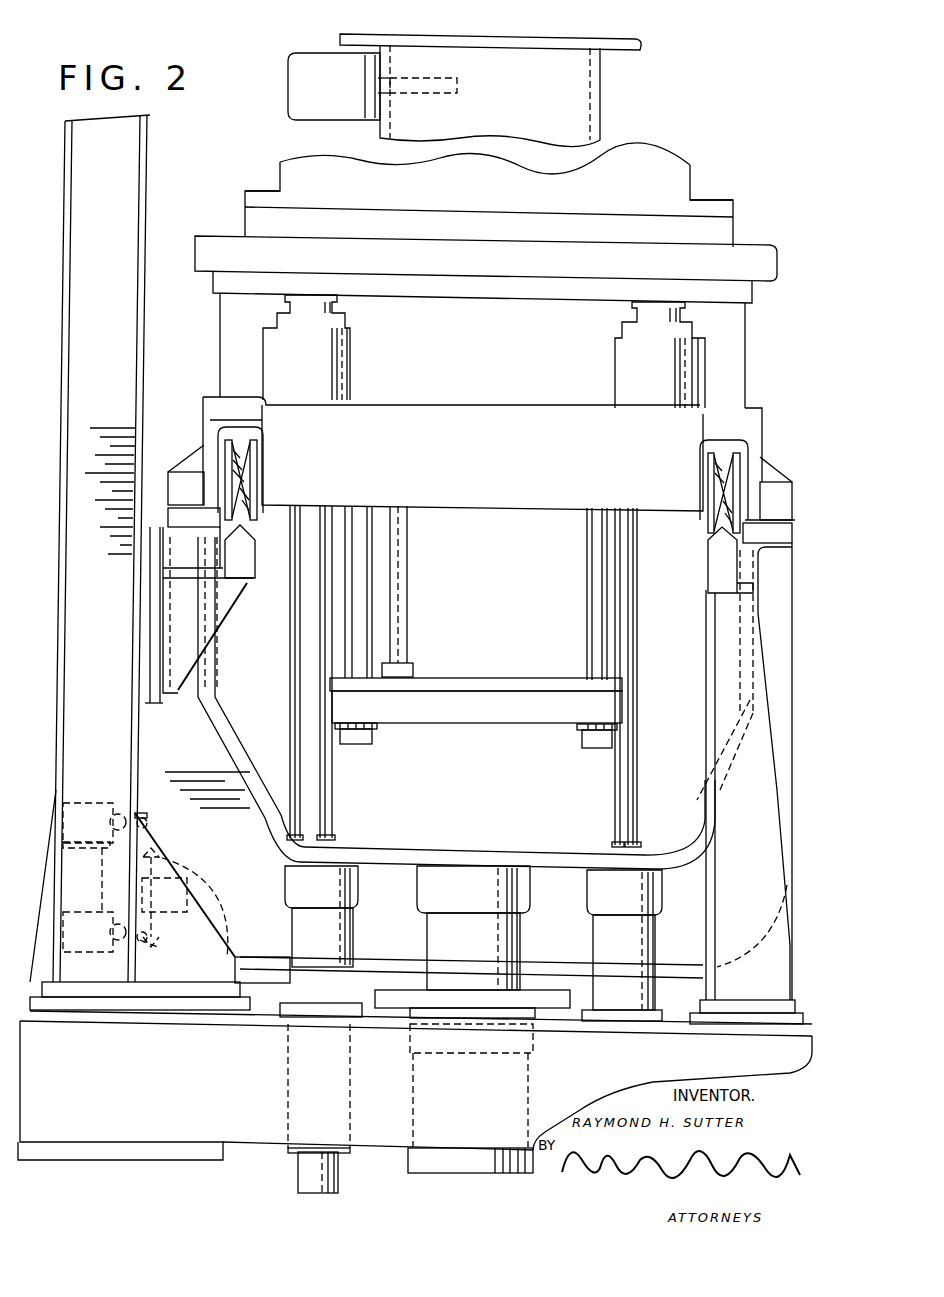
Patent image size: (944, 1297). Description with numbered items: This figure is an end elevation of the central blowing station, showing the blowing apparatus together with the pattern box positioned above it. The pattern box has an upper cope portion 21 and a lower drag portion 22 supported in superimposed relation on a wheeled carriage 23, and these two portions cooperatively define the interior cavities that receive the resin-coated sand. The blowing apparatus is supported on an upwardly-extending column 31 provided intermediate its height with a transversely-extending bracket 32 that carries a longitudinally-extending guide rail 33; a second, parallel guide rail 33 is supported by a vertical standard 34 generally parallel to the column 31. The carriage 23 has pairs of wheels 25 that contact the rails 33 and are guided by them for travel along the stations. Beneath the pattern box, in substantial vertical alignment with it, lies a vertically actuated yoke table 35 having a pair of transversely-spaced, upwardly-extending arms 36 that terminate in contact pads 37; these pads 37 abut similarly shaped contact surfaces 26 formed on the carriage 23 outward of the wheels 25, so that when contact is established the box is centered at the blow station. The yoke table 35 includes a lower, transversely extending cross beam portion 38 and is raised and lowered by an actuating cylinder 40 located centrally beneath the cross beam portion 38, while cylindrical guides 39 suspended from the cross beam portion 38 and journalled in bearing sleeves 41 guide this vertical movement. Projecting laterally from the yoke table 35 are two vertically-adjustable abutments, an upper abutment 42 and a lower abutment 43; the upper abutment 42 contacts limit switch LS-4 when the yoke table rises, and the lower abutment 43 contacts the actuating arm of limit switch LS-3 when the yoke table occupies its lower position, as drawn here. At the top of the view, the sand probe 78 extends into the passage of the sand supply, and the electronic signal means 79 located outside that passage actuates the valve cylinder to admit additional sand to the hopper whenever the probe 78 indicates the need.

The upper cope portion 21 is at (555, 287).
The lower drag portion 22 is at (482, 275).
The wheeled carriage 23 is at (448, 411).
The wheels 25 is at (258, 494).
The contact surfaces 26 is at (180, 500).
The columns 31 is at (132, 341).
The brackets 32 is at (178, 690).
The guide rail 33 is at (243, 552).
The vertical standard 34 is at (730, 650).
The yoke table 35 is at (254, 749).
The arms 36 is at (750, 697).
The contact pads 37 is at (178, 517).
The cross beam portion 38 is at (477, 856).
The cylindrical guides 39 is at (308, 1172).
The actuating cylinder 40 is at (535, 1106).
The bearing sleeves 41 is at (350, 983).
The upper abutment 42 is at (165, 860).
The lower abutment 43 is at (150, 945).
The sand probe 78 is at (458, 90).
The signal means 79 is at (312, 107).
The limit switch LS-3 is at (82, 945).
The limit switch LS-4 is at (88, 803).